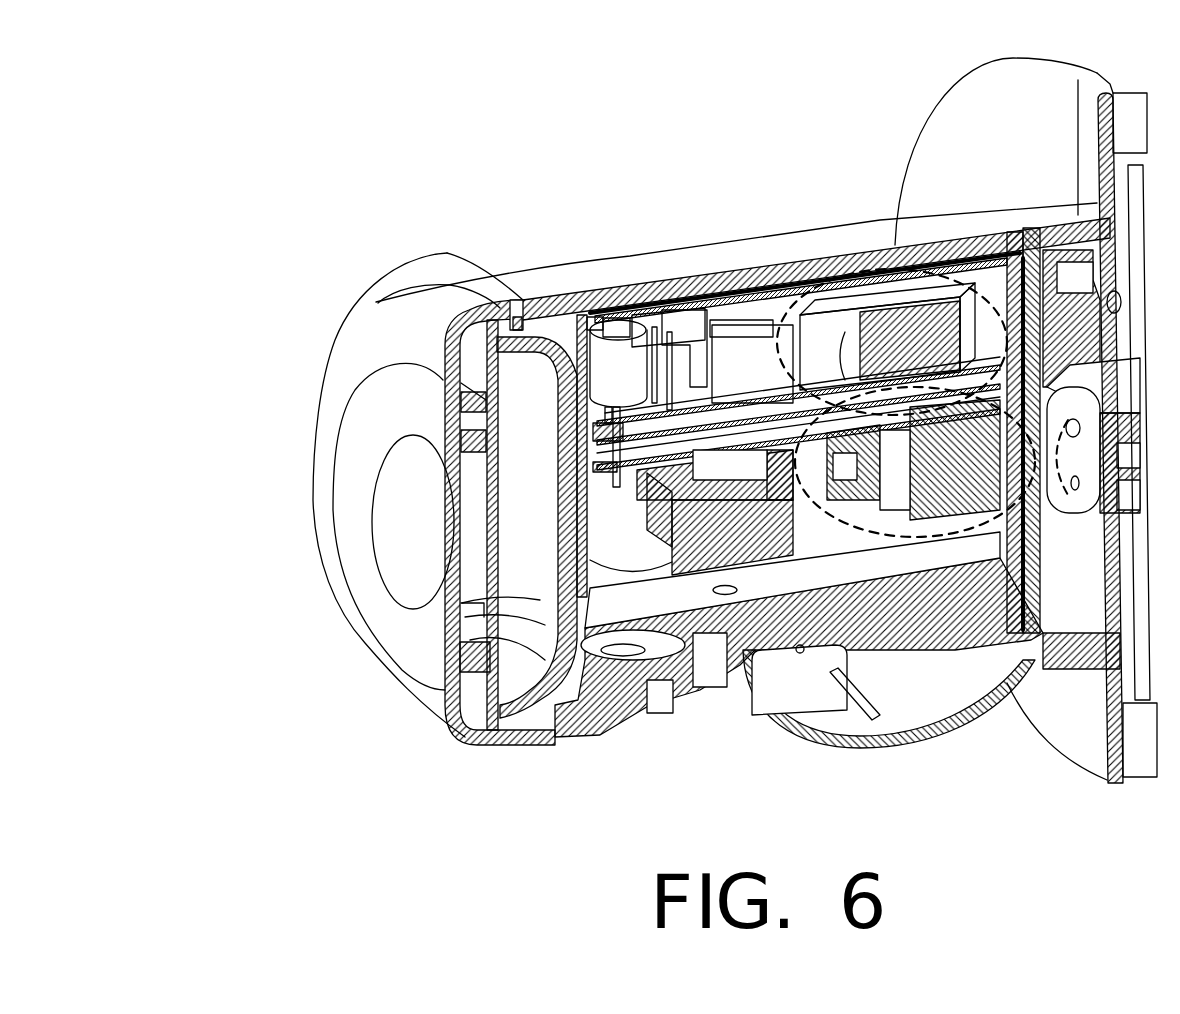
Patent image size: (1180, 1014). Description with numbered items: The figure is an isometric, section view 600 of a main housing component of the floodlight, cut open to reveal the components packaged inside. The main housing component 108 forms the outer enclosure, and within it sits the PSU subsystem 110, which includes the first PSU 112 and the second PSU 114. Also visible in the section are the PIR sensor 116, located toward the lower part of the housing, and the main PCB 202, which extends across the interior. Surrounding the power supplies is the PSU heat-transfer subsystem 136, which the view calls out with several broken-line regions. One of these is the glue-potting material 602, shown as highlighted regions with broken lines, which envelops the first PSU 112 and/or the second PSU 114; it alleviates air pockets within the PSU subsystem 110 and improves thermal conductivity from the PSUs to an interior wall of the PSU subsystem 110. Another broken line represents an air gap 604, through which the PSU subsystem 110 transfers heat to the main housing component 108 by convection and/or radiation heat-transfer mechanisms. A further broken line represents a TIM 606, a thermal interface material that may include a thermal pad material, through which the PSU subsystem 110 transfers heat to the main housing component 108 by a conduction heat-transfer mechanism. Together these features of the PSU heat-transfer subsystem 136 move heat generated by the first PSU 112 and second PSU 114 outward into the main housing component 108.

The section view 600 is at (120, 51).
The main housing component 108 is at (640, 253).
The PSU subsystem 110 is at (577, 318).
The first PSU 112 is at (974, 494).
The second PSU 114 is at (923, 362).
The PIR sensor 116 is at (835, 695).
The PSU heat-transfer subsystem 136 is at (933, 155).
The main PCB 202 is at (847, 585).
The glue-potting material 602 is at (840, 500).
The air gap 604 is at (958, 278).
The TIM 606 is at (1033, 280).